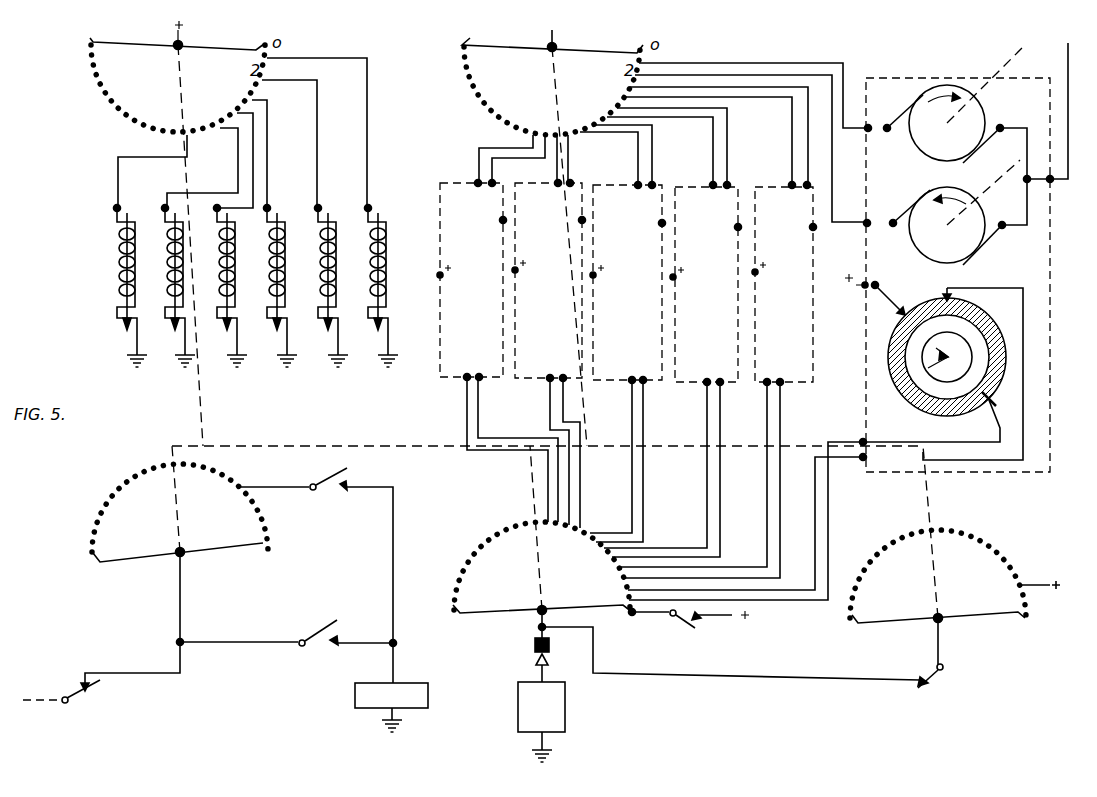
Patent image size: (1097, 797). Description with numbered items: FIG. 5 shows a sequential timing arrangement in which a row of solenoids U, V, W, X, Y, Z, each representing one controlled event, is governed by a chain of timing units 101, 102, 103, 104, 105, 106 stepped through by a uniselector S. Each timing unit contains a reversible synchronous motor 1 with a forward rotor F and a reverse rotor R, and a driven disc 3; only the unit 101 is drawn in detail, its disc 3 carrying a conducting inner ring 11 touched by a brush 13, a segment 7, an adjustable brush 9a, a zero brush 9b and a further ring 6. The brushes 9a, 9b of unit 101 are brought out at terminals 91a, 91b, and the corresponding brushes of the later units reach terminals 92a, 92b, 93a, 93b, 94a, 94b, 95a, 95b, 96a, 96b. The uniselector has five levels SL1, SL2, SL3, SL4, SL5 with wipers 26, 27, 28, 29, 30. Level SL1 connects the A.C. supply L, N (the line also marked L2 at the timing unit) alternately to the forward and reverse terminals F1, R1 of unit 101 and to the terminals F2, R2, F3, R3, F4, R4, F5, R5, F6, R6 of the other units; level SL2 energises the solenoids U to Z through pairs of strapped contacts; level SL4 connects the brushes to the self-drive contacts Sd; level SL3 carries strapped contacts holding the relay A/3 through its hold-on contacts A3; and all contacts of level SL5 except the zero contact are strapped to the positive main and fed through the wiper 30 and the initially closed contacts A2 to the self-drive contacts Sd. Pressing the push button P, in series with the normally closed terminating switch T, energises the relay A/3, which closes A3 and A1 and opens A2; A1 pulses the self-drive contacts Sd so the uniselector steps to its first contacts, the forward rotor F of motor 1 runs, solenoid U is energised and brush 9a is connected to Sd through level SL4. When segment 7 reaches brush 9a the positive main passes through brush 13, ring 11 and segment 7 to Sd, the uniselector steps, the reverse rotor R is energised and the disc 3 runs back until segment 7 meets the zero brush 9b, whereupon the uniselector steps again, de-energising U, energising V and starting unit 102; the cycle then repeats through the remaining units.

The contact arm of selector switch SL2 27 is at (224, 47).
The contact arm of selector switch SL1 26 is at (610, 50).
The contact arm of selector switch SL3 28 is at (213, 553).
The contact arm of selector switch SL4 29 is at (503, 605).
The wiper 30 is at (897, 613).
The reversible synchronous motor 1 is at (953, 104).
The timing unit 101 is at (1050, 236).
The segment 7 is at (986, 303).
The conducting inner ring 11 is at (968, 341).
The driven disc 3 is at (957, 369).
The brush 13 is at (922, 372).
The slip ring 6 is at (925, 396).
The adjustable brush 9a is at (975, 414).
The zero brush 9b is at (945, 296).
The terminal 91a is at (861, 438).
The terminal 91b is at (862, 461).
The terminal 92a is at (780, 378).
The terminal 93a is at (720, 378).
The terminal 94a is at (643, 376).
The terminal 95a is at (563, 374).
The terminal 96a is at (479, 373).
The terminal 92b is at (766, 386).
The terminal 93b is at (706, 386).
The terminal 94b is at (630, 384).
The terminal 95b is at (549, 382).
The terminal 96b is at (466, 381).
The timing unit 102 is at (799, 300).
The timing unit 103 is at (721, 300).
The timing unit 104 is at (642, 300).
The timing unit 105 is at (563, 300).
The timing unit 106 is at (487, 300).
The first level SL1 is at (552, 91).
The second level SL2 is at (178, 88).
The third level SL3 is at (180, 508).
The fourth level SL4 is at (542, 566).
The fifth level SL5 is at (938, 574).
The forward rotor F is at (953, 134).
The reverse rotor R is at (953, 236).
The terminal F1 is at (866, 132).
The terminal R1 is at (865, 220).
The terminal F2 is at (806, 189).
The terminal F3 is at (726, 189).
The terminal F4 is at (650, 189).
The terminal F5 is at (569, 187).
The terminal F6 is at (492, 187).
The terminal R2 is at (790, 182).
The terminal R3 is at (711, 182).
The terminal R4 is at (636, 182).
The terminal R5 is at (556, 181).
The terminal R6 is at (475, 181).
The A.C. supply line L is at (501, 222).
The line supply terminal L2 is at (1075, 29).
The A.C. supply neutral N is at (556, 25).
The solenoid Z is at (115, 263).
The solenoid Y is at (163, 263).
The solenoid X is at (215, 263).
The solenoid W is at (265, 263).
The solenoid V is at (316, 263).
The solenoid U is at (366, 263).
The contacts A1 is at (690, 626).
The contacts A2 is at (940, 683).
The hold-on contacts A3 is at (338, 470).
The push button P is at (322, 628).
The switch T is at (85, 700).
The uniselector S is at (548, 720).
The self-drive contacts Sd is at (534, 647).